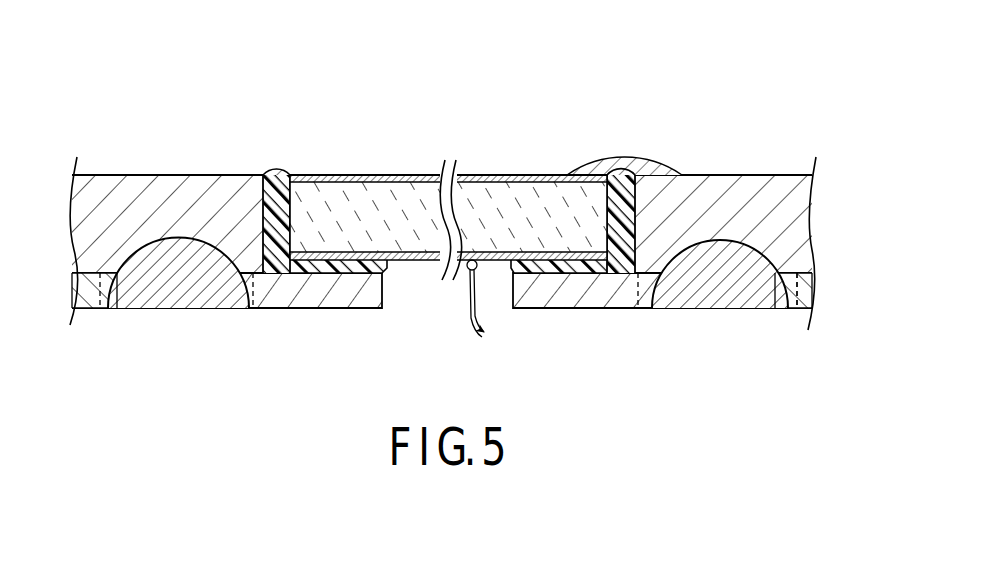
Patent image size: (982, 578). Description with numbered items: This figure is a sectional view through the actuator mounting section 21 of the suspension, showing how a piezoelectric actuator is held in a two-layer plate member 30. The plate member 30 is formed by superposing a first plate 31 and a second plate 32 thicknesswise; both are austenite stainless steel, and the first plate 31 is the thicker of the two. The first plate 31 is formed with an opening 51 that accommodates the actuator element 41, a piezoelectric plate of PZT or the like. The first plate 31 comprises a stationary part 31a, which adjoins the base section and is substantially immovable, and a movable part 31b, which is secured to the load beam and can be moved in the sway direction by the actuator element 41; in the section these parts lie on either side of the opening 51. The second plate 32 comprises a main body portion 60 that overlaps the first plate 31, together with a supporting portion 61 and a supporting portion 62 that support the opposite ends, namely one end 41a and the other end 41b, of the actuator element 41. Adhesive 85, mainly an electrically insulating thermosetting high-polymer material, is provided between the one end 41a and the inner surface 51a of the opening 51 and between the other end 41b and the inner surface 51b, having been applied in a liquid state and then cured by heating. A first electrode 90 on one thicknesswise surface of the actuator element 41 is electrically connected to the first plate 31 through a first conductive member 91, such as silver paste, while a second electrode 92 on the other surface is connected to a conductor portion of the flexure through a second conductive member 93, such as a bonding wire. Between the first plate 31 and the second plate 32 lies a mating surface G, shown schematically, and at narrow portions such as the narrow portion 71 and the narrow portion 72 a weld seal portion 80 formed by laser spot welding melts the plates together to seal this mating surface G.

The actuator mounting section 21 is at (495, 80).
The plate member 30 is at (70, 258).
The first plate 31 is at (86, 173).
The stationary part 31a is at (210, 192).
The movable part 31b is at (782, 190).
The second plate 32 is at (98, 311).
The actuator element 41 is at (446, 190).
The one end of actuator element 41a is at (576, 183).
The other end of actuator element 41b is at (285, 212).
The opening 51 is at (406, 286).
The inner surface of opening 51a is at (633, 178).
The inner surface of opening 51b is at (265, 177).
The main body portion 60 is at (808, 312).
The supporting portion 61 is at (565, 300).
The supporting portion 62 is at (322, 300).
The narrow portion 71 is at (646, 312).
The narrow portion 72 is at (249, 303).
The weld seal portion 80 is at (181, 300).
The adhesive 85 is at (280, 172).
The first electrode 90 is at (497, 176).
The first conductive member 91 is at (647, 158).
The second electrode 92 is at (496, 268).
The second conductive member 93 is at (470, 320).
The mating surface G is at (66, 290).